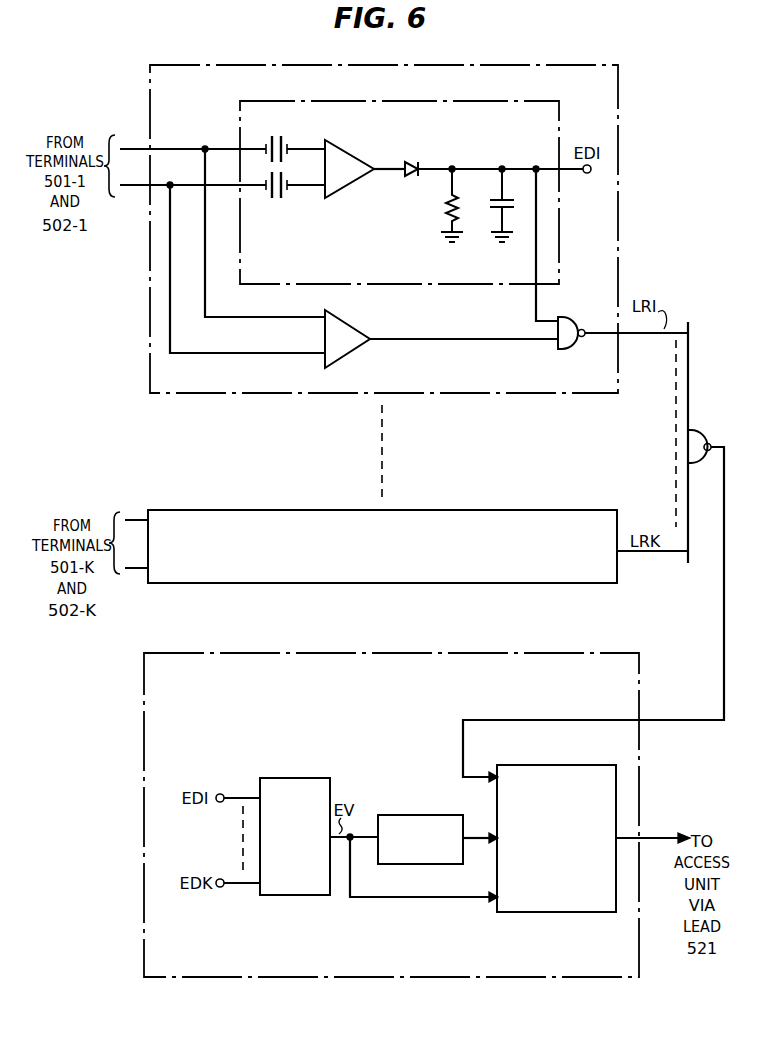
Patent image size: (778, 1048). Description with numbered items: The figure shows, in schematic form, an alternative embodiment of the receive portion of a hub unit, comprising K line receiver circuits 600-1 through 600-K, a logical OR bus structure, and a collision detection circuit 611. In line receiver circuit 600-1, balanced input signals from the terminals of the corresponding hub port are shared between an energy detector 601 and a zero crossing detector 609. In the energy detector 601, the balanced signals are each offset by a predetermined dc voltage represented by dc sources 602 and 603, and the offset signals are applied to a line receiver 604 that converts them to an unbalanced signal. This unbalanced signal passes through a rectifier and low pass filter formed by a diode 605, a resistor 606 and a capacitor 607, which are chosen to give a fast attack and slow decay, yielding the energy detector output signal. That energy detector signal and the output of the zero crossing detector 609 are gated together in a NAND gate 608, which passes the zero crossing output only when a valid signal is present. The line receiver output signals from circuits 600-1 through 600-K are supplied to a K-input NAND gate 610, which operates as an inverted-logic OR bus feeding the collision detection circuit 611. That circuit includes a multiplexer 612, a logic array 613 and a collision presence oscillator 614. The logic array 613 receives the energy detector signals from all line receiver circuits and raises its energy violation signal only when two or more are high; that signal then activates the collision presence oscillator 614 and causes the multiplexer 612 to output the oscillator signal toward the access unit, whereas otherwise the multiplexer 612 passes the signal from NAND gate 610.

The line receiver circuit 600-1 is at (150, 88).
The line receiver circuit 600-K is at (294, 510).
The energy detector 601 is at (230, 127).
The dc source 602 is at (266, 194).
The dc source 603 is at (287, 140).
The line receiver 604 is at (347, 186).
The diode 605 is at (409, 167).
The resistor 606 is at (439, 209).
The capacitor 607 is at (500, 206).
The NAND gate 608 is at (566, 316).
The zero crossing detector 609 is at (358, 328).
The K-input NAND gate 610 is at (700, 432).
The collision detection circuit 611 is at (323, 651).
The multiplexer 612 is at (571, 765).
The logic array 613 is at (299, 775).
The collision presence oscillator 614 is at (429, 815).